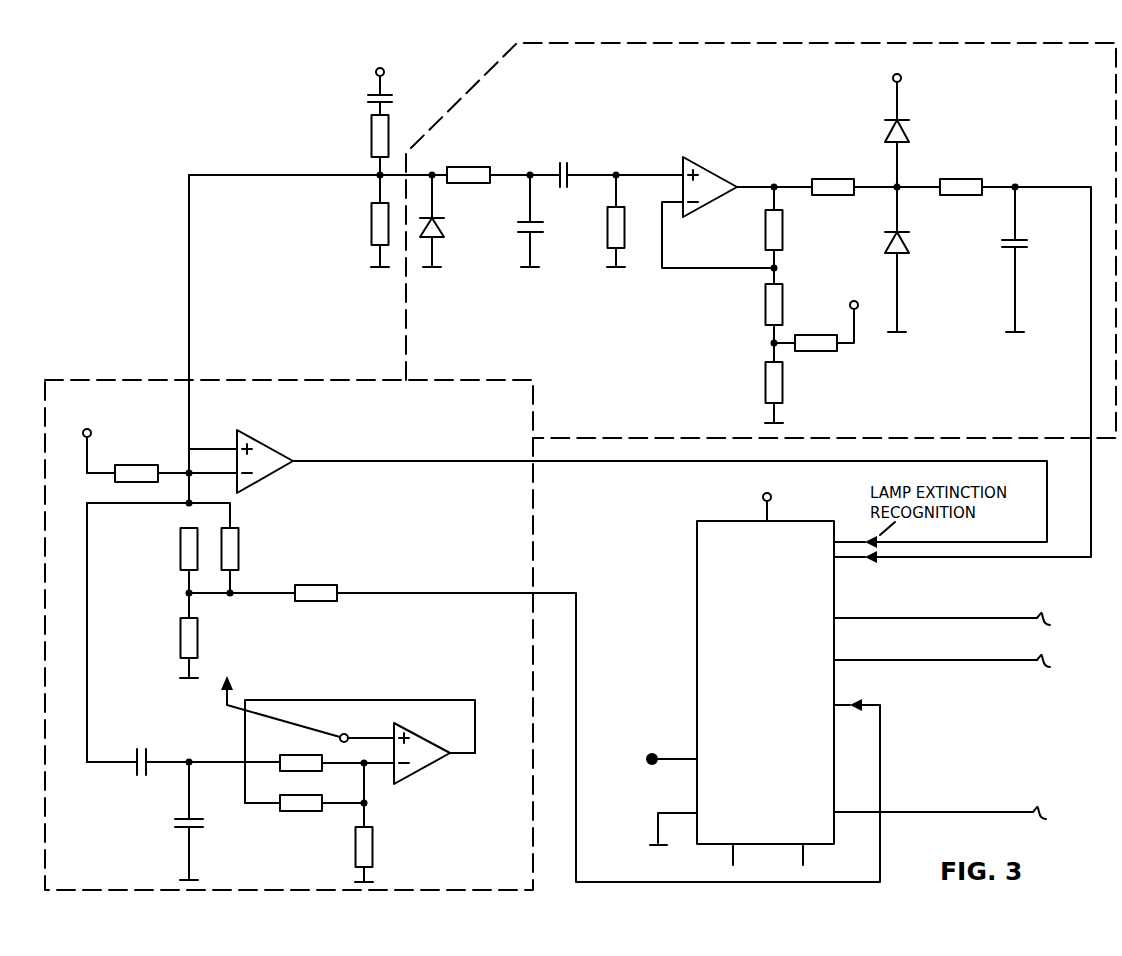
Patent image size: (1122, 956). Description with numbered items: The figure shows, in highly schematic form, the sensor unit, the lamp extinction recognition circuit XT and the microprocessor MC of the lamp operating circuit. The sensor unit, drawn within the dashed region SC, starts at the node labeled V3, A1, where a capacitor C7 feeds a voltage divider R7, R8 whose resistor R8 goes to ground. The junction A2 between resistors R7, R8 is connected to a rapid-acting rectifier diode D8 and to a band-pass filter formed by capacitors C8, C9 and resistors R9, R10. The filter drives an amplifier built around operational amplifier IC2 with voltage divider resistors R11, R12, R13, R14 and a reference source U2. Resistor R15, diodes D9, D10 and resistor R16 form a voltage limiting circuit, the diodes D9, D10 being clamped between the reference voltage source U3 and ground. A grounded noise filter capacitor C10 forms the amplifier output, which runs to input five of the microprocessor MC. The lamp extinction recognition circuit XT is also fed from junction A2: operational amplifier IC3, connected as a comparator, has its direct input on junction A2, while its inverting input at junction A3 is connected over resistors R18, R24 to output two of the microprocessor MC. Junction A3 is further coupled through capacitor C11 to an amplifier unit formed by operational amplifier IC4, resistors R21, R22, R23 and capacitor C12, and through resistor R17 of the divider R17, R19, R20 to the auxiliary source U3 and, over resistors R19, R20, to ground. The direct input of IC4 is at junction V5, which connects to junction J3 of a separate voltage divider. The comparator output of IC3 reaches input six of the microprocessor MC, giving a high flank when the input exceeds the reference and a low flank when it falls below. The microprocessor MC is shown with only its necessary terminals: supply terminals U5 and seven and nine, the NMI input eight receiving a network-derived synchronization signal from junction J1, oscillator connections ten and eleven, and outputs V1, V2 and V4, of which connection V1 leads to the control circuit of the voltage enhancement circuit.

The signal conditioning circuit SC is at (719, 87).
The lamp extinction recognition circuit XT is at (421, 423).
The microprocessor MC is at (765, 693).
The terminal V3 is at (419, 77).
The node A1 is at (380, 81).
The junction A2 is at (367, 186).
The junction A3 is at (191, 462).
The capacitor C7 is at (366, 101).
The capacitor C8 is at (546, 220).
The capacitor C9 is at (552, 163).
The noise filter capacitor C10 is at (1032, 258).
The capacitor C11 is at (183, 749).
The capacitor C12 is at (206, 820).
The resistor R7 is at (396, 145).
The resistor R8 is at (363, 221).
The resistor R9 is at (468, 163).
The resistor R10 is at (596, 220).
The voltage divider resistor R11 is at (798, 234).
The voltage divider resistor R12 is at (797, 323).
The voltage divider resistor R13 is at (755, 392).
The voltage divider resistor R14 is at (814, 344).
The resistor R15 is at (835, 174).
The resistor R16 is at (959, 175).
The resistor R17 is at (154, 441).
The resistor R18 is at (242, 562).
The resistor R19 is at (168, 573).
The resistor R20 is at (212, 648).
The resistor R21 is at (337, 752).
The resistor R22 is at (306, 802).
The resistor R23 is at (386, 854).
The resistor R24 is at (315, 579).
The rapid-acting rectifier diode D8 is at (449, 220).
The diode D9 is at (914, 153).
The diode D10 is at (921, 258).
The operational amplifier IC2 is at (718, 198).
The operational amplifier IC3 is at (241, 451).
The operational amplifier IC4 is at (422, 749).
The voltage supply or reference source U2 is at (849, 291).
The reference voltage source U3 is at (912, 93).
The voltage terminal U5 is at (767, 495).
The connection V1 is at (954, 800).
The output V2 is at (959, 660).
The output V4 is at (959, 618).
The junction V5 is at (363, 727).
The junction J1 is at (659, 760).
The junction J3 is at (278, 695).